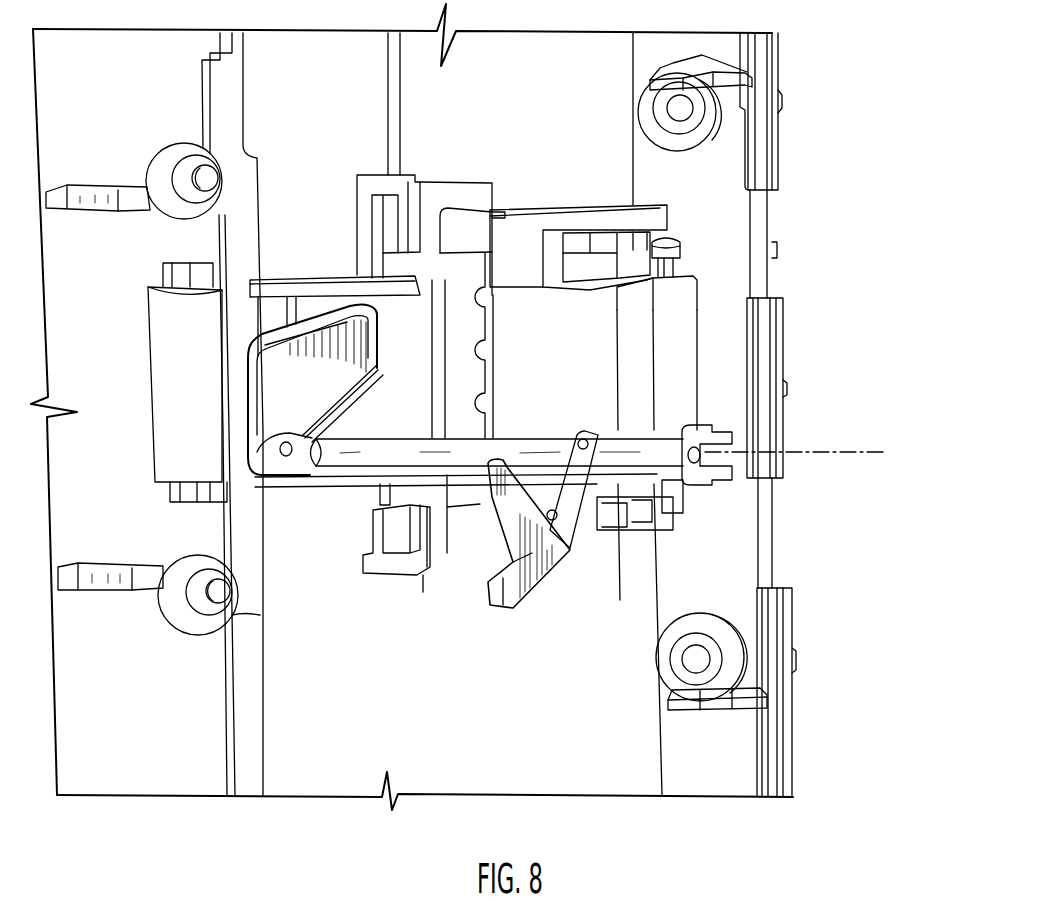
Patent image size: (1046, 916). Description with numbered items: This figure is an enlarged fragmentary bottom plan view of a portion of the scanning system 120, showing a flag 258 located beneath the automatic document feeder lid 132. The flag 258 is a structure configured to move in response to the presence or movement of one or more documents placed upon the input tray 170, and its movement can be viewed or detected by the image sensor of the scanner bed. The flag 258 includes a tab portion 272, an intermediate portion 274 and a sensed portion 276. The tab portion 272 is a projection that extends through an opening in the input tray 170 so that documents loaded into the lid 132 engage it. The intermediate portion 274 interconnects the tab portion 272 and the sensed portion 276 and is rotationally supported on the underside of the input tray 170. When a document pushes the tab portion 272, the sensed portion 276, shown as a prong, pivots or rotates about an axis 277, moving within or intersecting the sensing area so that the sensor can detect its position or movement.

The scanning system 120 is at (852, 113).
The automatic document feeder lid 132 is at (823, 351).
The input tray 170 is at (774, 164).
The flag 258 is at (330, 318).
The tab portion 272 is at (347, 335).
The intermediate portion 274 is at (553, 437).
The sensed portion 276 is at (527, 578).
The axis 277 is at (810, 451).